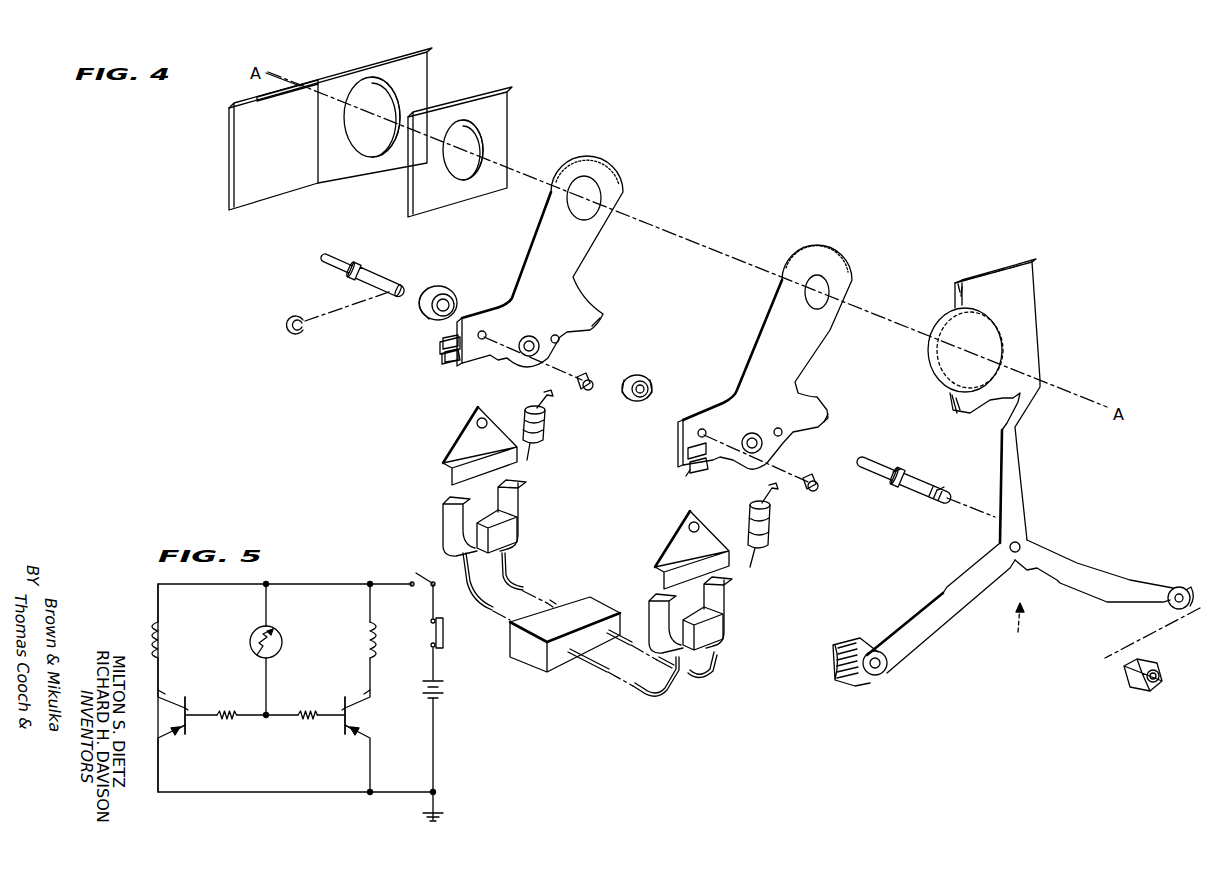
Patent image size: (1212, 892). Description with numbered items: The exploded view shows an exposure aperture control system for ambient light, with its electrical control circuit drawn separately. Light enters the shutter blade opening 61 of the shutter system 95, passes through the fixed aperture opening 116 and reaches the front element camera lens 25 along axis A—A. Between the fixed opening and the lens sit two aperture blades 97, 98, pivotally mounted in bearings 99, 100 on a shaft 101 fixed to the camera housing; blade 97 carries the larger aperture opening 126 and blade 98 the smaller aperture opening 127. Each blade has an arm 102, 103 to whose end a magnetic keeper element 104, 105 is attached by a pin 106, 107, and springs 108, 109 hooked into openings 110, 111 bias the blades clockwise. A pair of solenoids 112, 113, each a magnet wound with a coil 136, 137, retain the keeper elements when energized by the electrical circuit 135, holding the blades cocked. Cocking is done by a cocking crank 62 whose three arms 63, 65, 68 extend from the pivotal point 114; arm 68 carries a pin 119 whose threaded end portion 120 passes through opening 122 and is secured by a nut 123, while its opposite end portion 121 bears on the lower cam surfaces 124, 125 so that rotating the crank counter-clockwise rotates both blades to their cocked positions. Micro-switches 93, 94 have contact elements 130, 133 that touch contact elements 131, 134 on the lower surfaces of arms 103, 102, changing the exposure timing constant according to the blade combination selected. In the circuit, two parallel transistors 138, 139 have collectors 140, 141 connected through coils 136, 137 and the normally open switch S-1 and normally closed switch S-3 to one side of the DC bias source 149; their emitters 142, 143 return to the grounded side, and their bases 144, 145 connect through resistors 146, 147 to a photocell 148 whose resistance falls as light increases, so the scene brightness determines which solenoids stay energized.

In FIG. 4, the shutter system 95 is at (304, 74).
In FIG. 4, the shutter blade opening 61 is at (358, 140).
In FIG. 4, the fixed aperture opening 116 is at (455, 168).
In FIG. 4, the aperture blade 97 is at (610, 182).
In FIG. 4, the aperture opening 126 is at (583, 222).
In FIG. 4, the aperture blade 98 is at (826, 250).
In FIG. 4, the aperture opening 127 is at (812, 308).
In FIG. 4, the front element camera lens 25 is at (938, 367).
In FIG. 4, the shaft 101 is at (374, 275).
In FIG. 4, the bearing 99 is at (447, 292).
In FIG. 4, the contact element 134 is at (442, 342).
In FIG. 4, the contact element 133 is at (444, 355).
In FIG. 4, the micro-switch 94 is at (445, 366).
In FIG. 4, the arm 102 is at (511, 331).
In FIG. 4, the opening 110 is at (554, 334).
In FIG. 4, the lower cam surface 124 is at (590, 326).
In FIG. 4, the pin 106 is at (585, 375).
In FIG. 4, the bearing 100 is at (650, 382).
In FIG. 4, the magnetic keeper element 104 is at (485, 412).
In FIG. 4, the spring 108 is at (549, 426).
In FIG. 4, the arm 103 is at (733, 431).
In FIG. 4, the opening 111 is at (778, 428).
In FIG. 4, the lower cam surface 125 is at (826, 418).
In FIG. 4, the contact element 131 is at (688, 452).
In FIG. 4, the contact element 130 is at (691, 470).
In FIG. 4, the micro-switch 93 is at (688, 478).
In FIG. 4, the pin 107 is at (812, 480).
In FIG. 4, the magnetic keeper element 105 is at (704, 516).
In FIG. 4, the spring 109 is at (780, 522).
In FIG. 4, the solenoid 112 is at (442, 538).
In FIG. 4, the coil 136 is at (505, 538).
In FIG. 5, the coil 136 is at (163, 645).
In FIG. 4, the electrical circuit 135 is at (586, 600).
In FIG. 5, the electrical circuit 135 is at (302, 823).
In FIG. 4, the solenoid 113 is at (740, 613).
In FIG. 4, the coil 137 is at (720, 644).
In FIG. 5, the coil 137 is at (375, 645).
In FIG. 4, the end portion 121 is at (878, 465).
In FIG. 4, the pin 119 is at (916, 470).
In FIG. 4, the threaded end portion 120 is at (944, 494).
In FIG. 4, the arm 65 is at (1015, 496).
In FIG. 4, the pivotal point 114 is at (1010, 547).
In FIG. 4, the opening 122 is at (1180, 584).
In FIG. 4, the arm 68 is at (1082, 586).
In FIG. 4, the arm 63 is at (925, 625).
In FIG. 4, the cocking crank 62 is at (1013, 630).
In FIG. 4, the nut 123 is at (1130, 691).
In FIG. 5, the photocell 148 is at (281, 639).
In FIG. 5, the collector 140 is at (163, 692).
In FIG. 5, the collector 141 is at (367, 692).
In FIG. 5, the transistor 138 is at (176, 718).
In FIG. 5, the transistor 139 is at (362, 716).
In FIG. 5, the base 144 is at (190, 705).
In FIG. 5, the base 145 is at (342, 705).
In FIG. 5, the resistor 146 is at (224, 714).
In FIG. 5, the resistor 147 is at (310, 713).
In FIG. 5, the emitter 142 is at (178, 736).
In FIG. 5, the emitter 143 is at (368, 736).
In FIG. 5, the DC bias source 149 is at (447, 690).
In FIG. 5, the switch S-1 is at (419, 591).
In FIG. 5, the switch S-3 is at (453, 633).